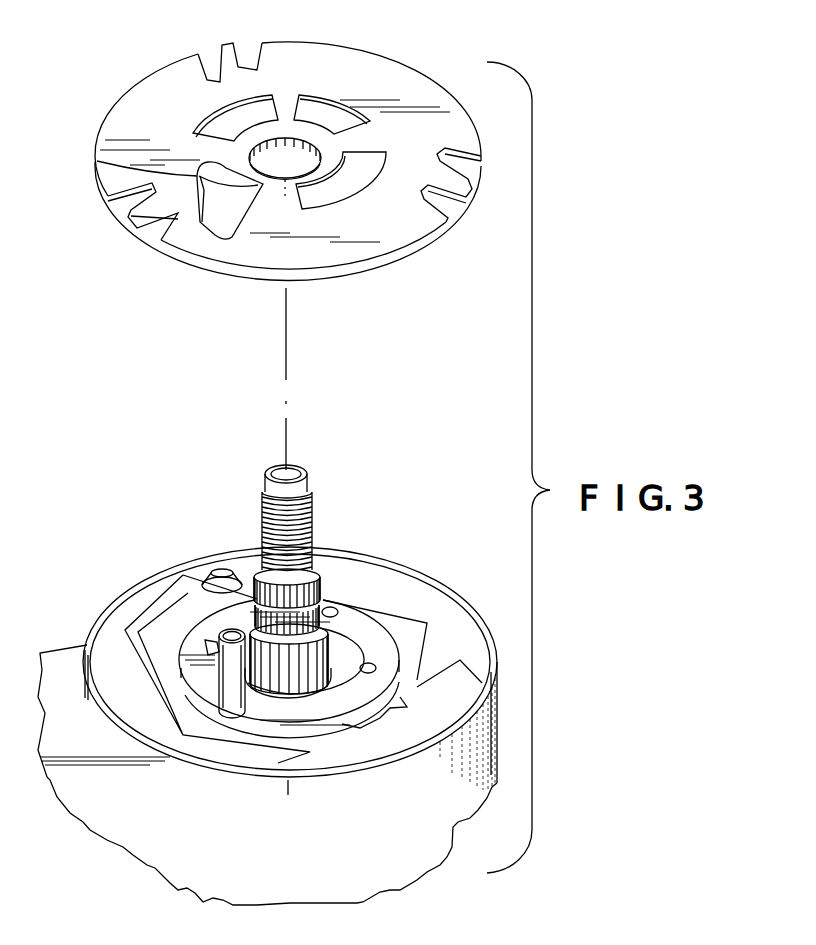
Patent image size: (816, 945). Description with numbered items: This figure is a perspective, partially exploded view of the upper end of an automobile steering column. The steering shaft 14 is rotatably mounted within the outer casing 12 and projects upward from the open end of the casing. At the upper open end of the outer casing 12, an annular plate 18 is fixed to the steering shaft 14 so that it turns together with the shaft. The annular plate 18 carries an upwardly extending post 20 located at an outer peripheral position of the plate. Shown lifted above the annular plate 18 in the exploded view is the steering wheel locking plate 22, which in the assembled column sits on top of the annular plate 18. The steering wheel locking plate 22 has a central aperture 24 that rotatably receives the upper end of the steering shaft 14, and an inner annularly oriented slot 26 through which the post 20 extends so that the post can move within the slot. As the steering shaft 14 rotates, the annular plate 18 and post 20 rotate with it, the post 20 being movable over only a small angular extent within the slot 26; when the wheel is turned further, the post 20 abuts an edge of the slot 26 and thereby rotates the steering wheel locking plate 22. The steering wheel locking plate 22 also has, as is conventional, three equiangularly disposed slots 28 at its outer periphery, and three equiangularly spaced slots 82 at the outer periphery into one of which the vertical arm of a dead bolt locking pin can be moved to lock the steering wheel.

The outer casing 12 is at (198, 857).
The steering shaft 14 is at (320, 578).
The annular plate 18 is at (363, 618).
The post 20 is at (223, 660).
The steering wheel locking plate 22 is at (158, 90).
The central aperture 24 is at (285, 140).
The inner annularly oriented slot 26 is at (97, 160).
The slots 28 is at (217, 52).
The slots 82 is at (113, 203).